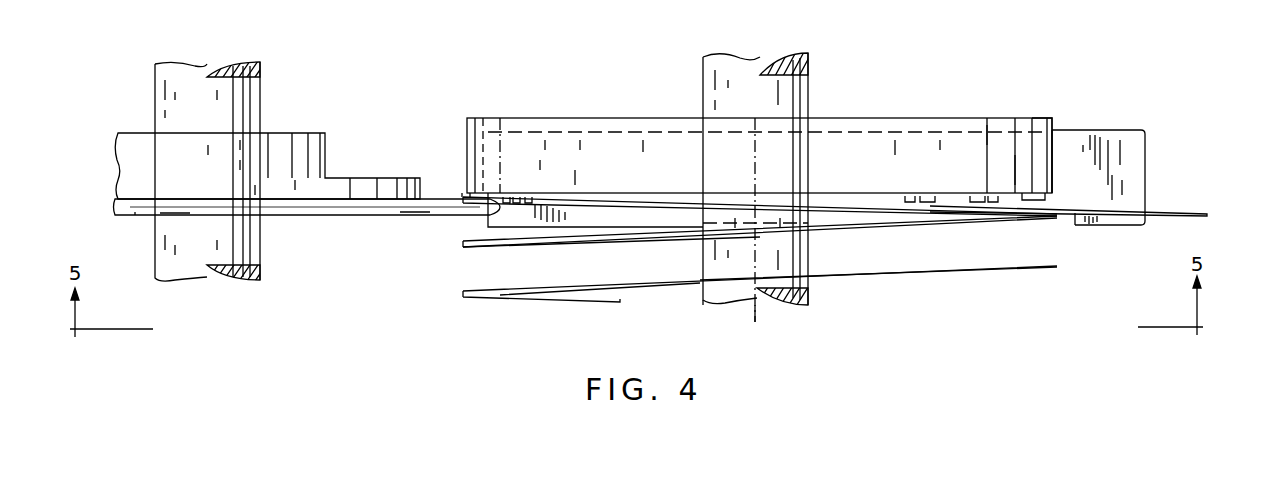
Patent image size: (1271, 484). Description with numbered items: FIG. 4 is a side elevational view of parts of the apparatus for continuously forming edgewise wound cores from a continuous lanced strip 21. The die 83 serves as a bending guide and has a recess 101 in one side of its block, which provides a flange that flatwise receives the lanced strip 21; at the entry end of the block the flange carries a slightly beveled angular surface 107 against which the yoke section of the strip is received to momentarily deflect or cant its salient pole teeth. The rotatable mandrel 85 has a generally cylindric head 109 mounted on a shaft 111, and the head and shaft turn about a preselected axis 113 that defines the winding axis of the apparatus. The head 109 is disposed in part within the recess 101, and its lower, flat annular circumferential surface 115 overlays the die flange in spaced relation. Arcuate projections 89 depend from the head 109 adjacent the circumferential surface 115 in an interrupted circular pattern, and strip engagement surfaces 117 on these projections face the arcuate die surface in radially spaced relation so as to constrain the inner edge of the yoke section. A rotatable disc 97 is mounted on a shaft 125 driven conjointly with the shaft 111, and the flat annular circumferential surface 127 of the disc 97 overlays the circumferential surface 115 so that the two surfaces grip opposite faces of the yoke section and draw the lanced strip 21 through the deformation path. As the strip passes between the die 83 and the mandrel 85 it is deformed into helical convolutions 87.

The shaft 125 is at (166, 96).
The rotatable disc 97 is at (368, 127).
The circumferential surface 127 is at (478, 207).
The rotatable mandrel 85 is at (990, 104).
The shaft 111 is at (703, 96).
The helical convolutions 87 is at (1057, 263).
The arcuate projections 89 is at (517, 197).
The strip engagement surfaces 117 is at (982, 198).
The circumferential surface 115 is at (477, 193).
The head 109 is at (1050, 128).
The recess 101 is at (1107, 135).
The die 83 is at (1158, 150).
The lanced strip 21 is at (1165, 213).
The angular surface 107 is at (1084, 215).
The axis 113 is at (755, 317).